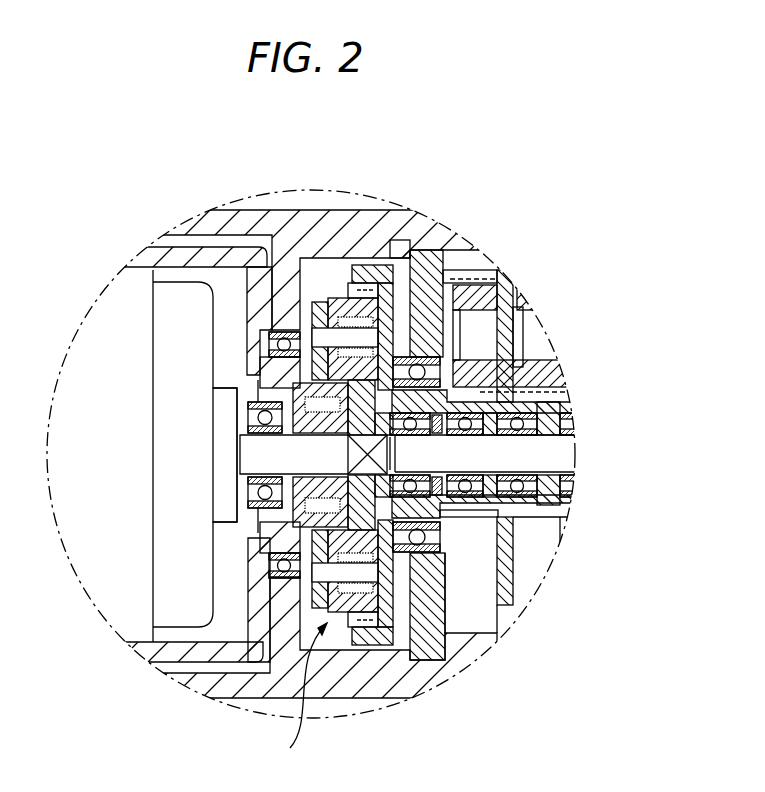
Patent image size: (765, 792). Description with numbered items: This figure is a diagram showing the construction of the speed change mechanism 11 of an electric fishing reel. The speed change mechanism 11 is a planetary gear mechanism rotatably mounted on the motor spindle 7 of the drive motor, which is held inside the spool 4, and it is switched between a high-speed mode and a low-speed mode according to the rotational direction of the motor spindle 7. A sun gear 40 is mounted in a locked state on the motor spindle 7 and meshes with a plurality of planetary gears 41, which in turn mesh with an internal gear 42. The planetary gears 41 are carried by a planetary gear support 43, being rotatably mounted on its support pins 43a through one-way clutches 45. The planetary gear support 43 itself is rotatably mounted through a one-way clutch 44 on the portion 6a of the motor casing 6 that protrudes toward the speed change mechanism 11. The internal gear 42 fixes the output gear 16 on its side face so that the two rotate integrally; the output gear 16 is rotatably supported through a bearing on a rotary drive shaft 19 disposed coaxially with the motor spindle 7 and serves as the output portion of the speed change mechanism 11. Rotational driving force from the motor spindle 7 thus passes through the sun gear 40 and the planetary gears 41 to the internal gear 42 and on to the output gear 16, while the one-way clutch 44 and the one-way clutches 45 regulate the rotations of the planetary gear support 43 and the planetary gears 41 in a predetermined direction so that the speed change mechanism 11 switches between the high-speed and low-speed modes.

The spool 4 is at (390, 678).
The motor casing 6 is at (198, 454).
The portion of the motor casing 6a is at (297, 462).
The motor spindle 7 is at (247, 447).
The speed change mechanism 11 is at (291, 698).
The output gear 16 is at (470, 513).
The rotary drive shaft 19 is at (537, 452).
The sun gear 40 is at (253, 533).
The planetary gears 41 is at (373, 603).
The internal gear 42 is at (376, 263).
The planetary gear support 43 is at (472, 382).
The support pins 43a is at (370, 337).
The one-way clutch 44 is at (297, 390).
The one-way clutches 45 is at (377, 308).